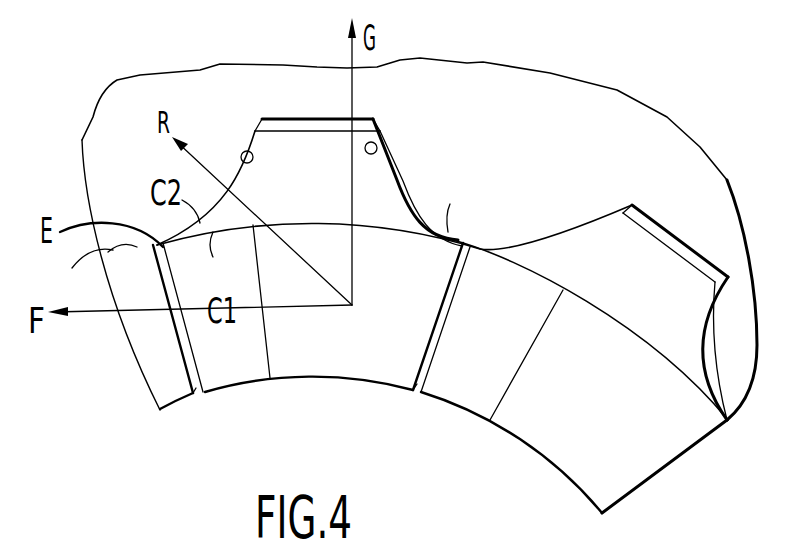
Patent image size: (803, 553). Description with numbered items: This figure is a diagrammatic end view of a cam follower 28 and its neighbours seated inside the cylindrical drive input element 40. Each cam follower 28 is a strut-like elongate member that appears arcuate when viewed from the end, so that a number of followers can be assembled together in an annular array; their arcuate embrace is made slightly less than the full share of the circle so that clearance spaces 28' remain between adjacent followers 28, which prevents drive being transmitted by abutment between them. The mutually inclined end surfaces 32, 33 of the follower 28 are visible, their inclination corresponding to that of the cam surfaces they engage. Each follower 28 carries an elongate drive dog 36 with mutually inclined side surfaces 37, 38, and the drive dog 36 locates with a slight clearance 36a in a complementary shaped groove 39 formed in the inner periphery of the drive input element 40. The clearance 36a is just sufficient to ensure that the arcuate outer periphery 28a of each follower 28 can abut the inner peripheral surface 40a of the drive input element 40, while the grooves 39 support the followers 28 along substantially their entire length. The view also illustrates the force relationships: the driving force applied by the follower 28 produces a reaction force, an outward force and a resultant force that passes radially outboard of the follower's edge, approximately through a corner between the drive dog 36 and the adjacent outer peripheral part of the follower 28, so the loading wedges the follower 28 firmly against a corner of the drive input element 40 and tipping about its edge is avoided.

The cam follower 28 is at (403, 369).
The clearance space 28' is at (291, 442).
The arcuate outer periphery 28a is at (458, 201).
The end surface 32 is at (200, 343).
The end surface 33 is at (440, 308).
The drive dog 36 is at (325, 185).
The clearance 36a is at (395, 178).
The side surface of drive dog 37 is at (372, 142).
The side surface of drive dog 38 is at (245, 152).
The groove 39 is at (282, 122).
The drive input element 40 is at (138, 83).
The inner peripheral surface 40a is at (513, 217).